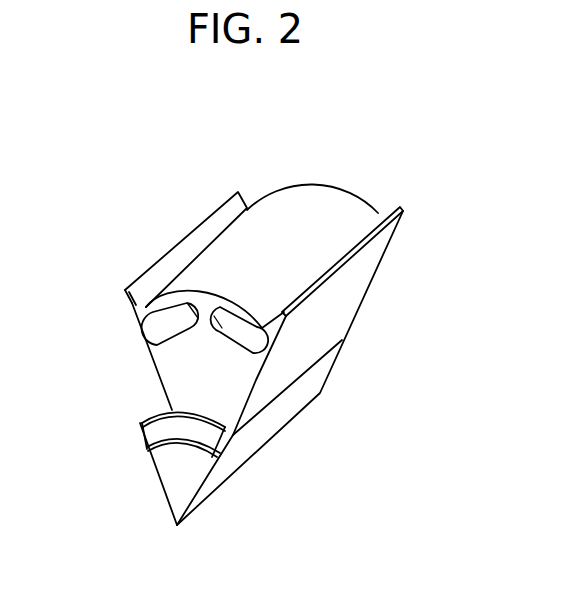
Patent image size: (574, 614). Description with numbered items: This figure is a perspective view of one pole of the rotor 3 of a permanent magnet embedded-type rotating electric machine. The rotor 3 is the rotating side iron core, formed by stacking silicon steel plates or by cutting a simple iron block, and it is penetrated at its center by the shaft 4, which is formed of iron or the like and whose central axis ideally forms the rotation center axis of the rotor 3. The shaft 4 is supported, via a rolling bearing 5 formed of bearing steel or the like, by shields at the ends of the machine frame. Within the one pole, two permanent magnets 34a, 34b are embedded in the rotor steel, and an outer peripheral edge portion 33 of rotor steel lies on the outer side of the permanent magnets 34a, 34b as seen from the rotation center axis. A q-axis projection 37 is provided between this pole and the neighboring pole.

The rotor 3 is at (356, 165).
The shaft 4 is at (260, 437).
The rolling bearing 5 is at (156, 432).
The outer peripheral edge portion 33 is at (283, 208).
The permanent magnet 34a is at (172, 320).
The permanent magnet 34b is at (243, 340).
The q-axis projection 37 is at (162, 253).